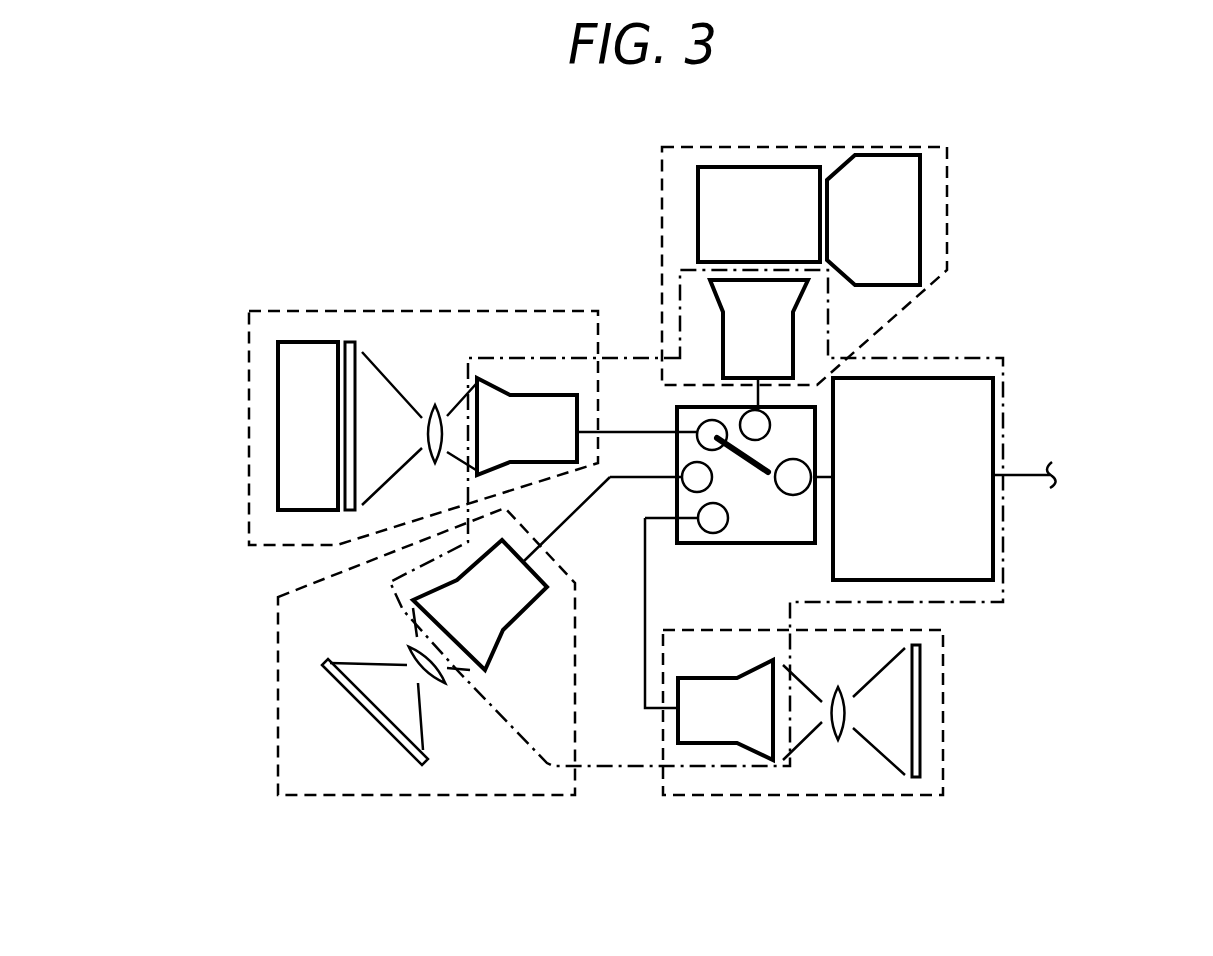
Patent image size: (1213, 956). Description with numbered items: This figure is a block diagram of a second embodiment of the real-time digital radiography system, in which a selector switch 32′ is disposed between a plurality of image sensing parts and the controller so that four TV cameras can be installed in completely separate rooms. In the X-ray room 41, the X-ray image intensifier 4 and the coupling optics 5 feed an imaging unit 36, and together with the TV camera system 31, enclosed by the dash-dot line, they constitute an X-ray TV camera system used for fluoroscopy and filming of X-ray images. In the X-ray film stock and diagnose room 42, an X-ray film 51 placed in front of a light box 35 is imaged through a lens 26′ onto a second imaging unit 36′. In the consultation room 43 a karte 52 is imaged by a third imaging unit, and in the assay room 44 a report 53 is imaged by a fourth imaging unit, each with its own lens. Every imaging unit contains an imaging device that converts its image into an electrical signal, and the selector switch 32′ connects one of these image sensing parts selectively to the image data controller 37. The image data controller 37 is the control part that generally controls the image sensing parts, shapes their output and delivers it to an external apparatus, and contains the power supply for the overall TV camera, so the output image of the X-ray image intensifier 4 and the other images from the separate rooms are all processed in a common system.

The X-ray image intensifier 4 is at (921, 190).
The coupling optics 5 is at (711, 167).
The lens 26′ is at (434, 405).
The TV camera system 31 is at (1004, 565).
The selector switch 32′ is at (683, 543).
The light box 35 is at (278, 493).
The imaging unit 36 is at (793, 337).
The imaging unit 36′ is at (538, 395).
The image data controller 37 is at (993, 450).
The X-ray room 41 is at (931, 285).
The X-ray film stock and diagnose room 42 is at (260, 311).
The consultation room 43 is at (278, 745).
The assay room 44 is at (684, 795).
The X-ray film 51 is at (350, 342).
The karte 52 is at (345, 694).
The report 53 is at (920, 705).